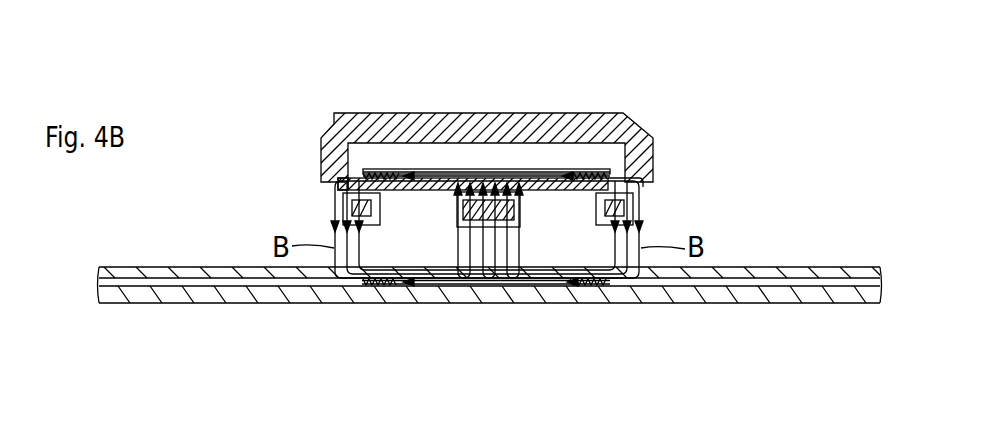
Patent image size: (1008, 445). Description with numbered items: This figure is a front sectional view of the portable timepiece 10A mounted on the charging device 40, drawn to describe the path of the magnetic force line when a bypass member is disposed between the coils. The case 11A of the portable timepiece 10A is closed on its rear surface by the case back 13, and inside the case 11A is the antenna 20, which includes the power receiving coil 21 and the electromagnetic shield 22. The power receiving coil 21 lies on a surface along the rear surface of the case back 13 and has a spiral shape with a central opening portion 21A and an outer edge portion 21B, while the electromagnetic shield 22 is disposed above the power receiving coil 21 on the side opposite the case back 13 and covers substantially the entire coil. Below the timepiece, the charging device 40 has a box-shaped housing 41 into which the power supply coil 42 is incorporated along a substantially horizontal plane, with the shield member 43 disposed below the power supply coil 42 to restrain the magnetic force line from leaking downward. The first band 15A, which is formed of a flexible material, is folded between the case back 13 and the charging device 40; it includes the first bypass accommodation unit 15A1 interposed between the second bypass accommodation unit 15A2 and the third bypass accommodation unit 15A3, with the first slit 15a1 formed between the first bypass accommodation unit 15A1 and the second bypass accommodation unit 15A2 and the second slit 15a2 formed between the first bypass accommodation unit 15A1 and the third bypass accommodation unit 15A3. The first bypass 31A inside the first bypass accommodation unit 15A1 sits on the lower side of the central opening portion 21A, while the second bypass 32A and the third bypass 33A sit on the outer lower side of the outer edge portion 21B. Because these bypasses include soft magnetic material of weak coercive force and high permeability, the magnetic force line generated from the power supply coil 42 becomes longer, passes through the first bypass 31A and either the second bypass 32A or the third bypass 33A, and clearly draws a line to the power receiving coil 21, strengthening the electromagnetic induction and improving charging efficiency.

The portable timepiece 10A is at (511, 88).
The case 11A is at (586, 114).
The case back 13 is at (538, 183).
The antenna 20 is at (427, 152).
The power receiving coil 21 is at (634, 178).
The central opening portion 21A is at (452, 152).
The outer edge portion 21B is at (358, 178).
The electromagnetic shield 22 is at (408, 172).
The second bypass 32A is at (352, 208).
The third bypass 33A is at (620, 198).
The first band 15A is at (447, 234).
The first bypass accommodation unit 15A1 is at (518, 214).
The second bypass accommodation unit 15A2 is at (353, 210).
The third bypass accommodation unit 15A3 is at (633, 202).
The first slit 15a1 is at (378, 210).
The second slit 15a2 is at (597, 212).
The first bypass 31A is at (468, 228).
The charging device 40 is at (772, 328).
The housing 41 is at (705, 303).
The power supply coil 42 is at (633, 303).
The shield member 43 is at (568, 286).